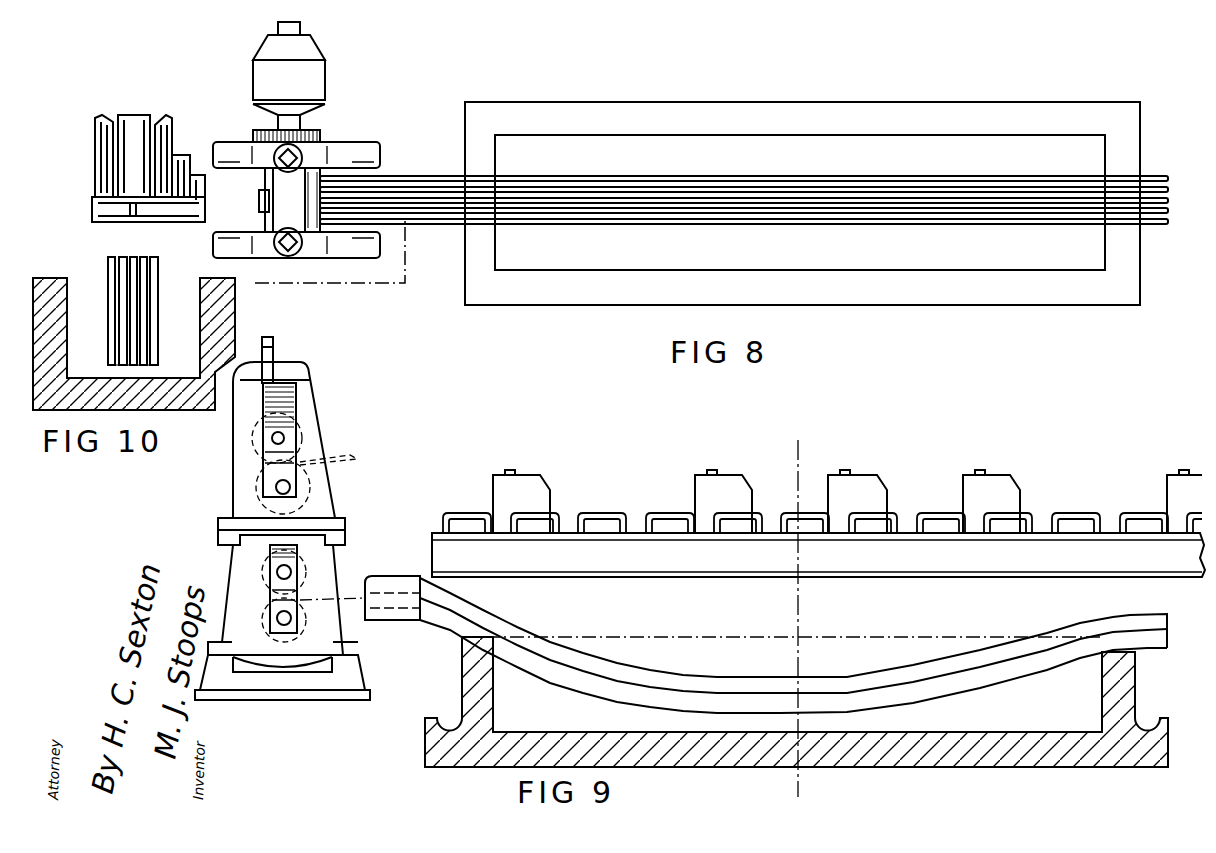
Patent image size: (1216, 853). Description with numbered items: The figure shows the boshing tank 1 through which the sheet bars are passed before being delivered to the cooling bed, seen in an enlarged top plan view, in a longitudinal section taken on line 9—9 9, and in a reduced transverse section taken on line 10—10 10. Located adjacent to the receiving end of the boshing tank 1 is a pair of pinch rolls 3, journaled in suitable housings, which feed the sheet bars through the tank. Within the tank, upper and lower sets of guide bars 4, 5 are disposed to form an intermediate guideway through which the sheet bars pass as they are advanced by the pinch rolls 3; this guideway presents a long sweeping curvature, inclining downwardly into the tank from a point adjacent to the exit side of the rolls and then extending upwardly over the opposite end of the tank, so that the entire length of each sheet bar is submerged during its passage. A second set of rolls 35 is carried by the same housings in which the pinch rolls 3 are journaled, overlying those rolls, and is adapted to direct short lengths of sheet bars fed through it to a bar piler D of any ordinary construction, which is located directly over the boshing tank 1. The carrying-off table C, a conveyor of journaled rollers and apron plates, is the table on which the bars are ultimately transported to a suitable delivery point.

In FIG. 8, the boshing tank 1 is at (826, 106).
In FIG. 10, the boshing tank 1 is at (232, 318).
In FIG. 9, the boshing tank 1 is at (462, 687).
In FIG. 9, the pinch rolls 3 is at (268, 610).
In FIG. 8, the upper set of guide bars 4 is at (743, 194).
In FIG. 10, the upper set of guide bars 4 is at (140, 333).
In FIG. 9, the upper set of guide bars 4 is at (760, 684).
In FIG. 10, the lower set of guide bars 5 is at (130, 360).
In FIG. 9, the lower set of guide bars 5 is at (957, 697).
In FIG. 8, the section line 9— 9 is at (712, 245).
In FIG. 9, the section line 10— 10 is at (796, 618).
In FIG. 8, the second set of rolls 35 is at (262, 213).
In FIG. 9, the second set of rolls 35 is at (262, 482).
In FIG. 9, the carrying-off table C is at (881, 558).
In FIG. 8, the bar piler D is at (135, 168).
In FIG. 9, the bar piler D is at (818, 523).